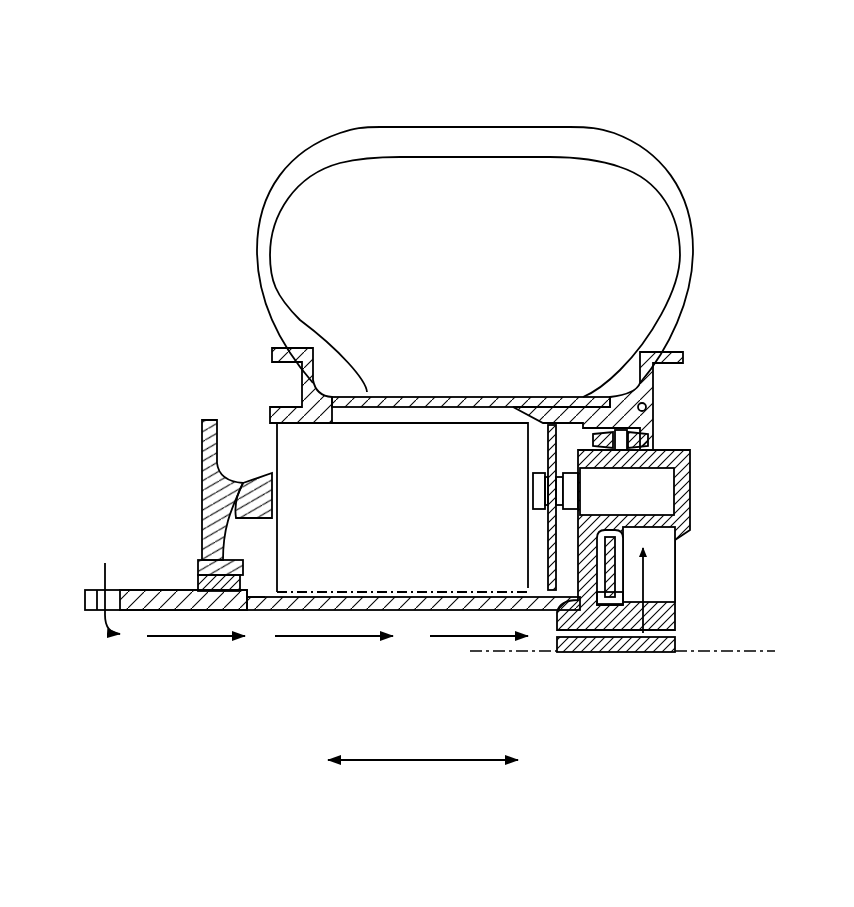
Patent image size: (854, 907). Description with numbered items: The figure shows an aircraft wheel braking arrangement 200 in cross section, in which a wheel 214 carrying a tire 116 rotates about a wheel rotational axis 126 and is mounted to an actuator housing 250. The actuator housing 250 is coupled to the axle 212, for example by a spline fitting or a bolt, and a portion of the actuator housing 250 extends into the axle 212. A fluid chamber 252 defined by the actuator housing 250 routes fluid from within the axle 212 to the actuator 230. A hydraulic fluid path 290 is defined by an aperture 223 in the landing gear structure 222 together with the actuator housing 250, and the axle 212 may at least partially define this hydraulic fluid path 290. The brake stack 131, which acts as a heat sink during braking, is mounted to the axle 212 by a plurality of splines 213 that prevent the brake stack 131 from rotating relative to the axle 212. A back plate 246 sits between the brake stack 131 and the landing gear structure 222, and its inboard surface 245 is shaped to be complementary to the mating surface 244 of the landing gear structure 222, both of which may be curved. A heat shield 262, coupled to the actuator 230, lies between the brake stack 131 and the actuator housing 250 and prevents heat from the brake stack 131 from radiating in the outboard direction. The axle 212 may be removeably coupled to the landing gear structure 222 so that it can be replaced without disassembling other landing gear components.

The aircraft wheel braking arrangement 200 is at (727, 90).
The tire 116 is at (503, 143).
The wheel 214 is at (483, 400).
The brake stack 131 is at (430, 506).
The actuator 230 is at (535, 492).
The heat shield 262 is at (549, 532).
The actuator housing 250 is at (692, 508).
The fluid chamber 252 is at (647, 538).
The mating surface 244 is at (232, 505).
The inboard surface 245 is at (250, 502).
The back plate 246 is at (250, 515).
The landing gear structure 222 is at (200, 568).
The aperture 223 is at (100, 607).
The hydraulic fluid path 290 is at (178, 638).
The splines 213 is at (268, 598).
The axle 212 is at (308, 605).
The wheel rotational axis 126 is at (723, 652).